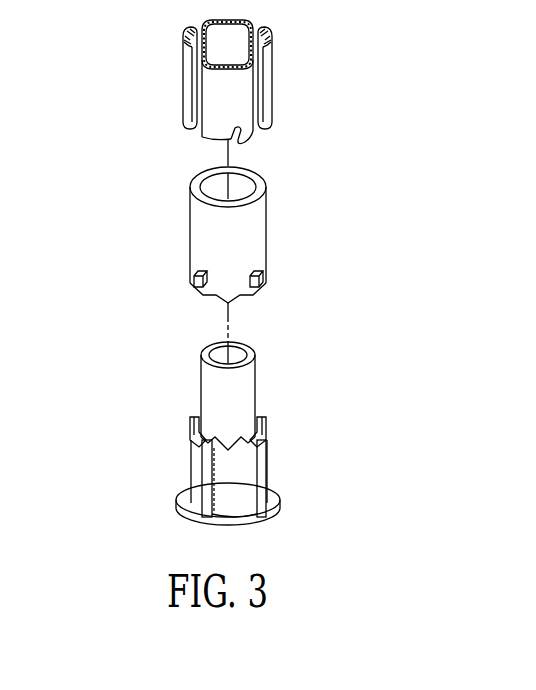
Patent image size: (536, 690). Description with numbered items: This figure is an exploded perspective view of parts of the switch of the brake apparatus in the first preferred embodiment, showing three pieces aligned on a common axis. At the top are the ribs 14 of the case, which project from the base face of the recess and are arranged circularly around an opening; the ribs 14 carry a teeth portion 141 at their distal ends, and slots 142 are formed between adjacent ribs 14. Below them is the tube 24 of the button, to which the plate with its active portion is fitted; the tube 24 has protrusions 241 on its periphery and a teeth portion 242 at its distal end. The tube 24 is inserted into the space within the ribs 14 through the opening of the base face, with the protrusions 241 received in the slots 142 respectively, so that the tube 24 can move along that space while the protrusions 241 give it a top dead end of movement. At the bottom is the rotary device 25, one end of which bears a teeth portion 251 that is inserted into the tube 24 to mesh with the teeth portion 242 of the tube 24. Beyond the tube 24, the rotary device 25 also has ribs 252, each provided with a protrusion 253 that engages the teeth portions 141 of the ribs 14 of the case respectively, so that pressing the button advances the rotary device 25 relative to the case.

The ribs 14 is at (185, 66).
The teeth portion 141 is at (240, 143).
The slots 142 is at (196, 90).
The tube 24 is at (260, 217).
The protrusions 241 is at (192, 277).
The teeth portion 242 is at (237, 300).
The rotary device 25 is at (205, 378).
The teeth portion 251 is at (262, 443).
The ribs 252 is at (203, 482).
The protrusion 253 is at (207, 440).